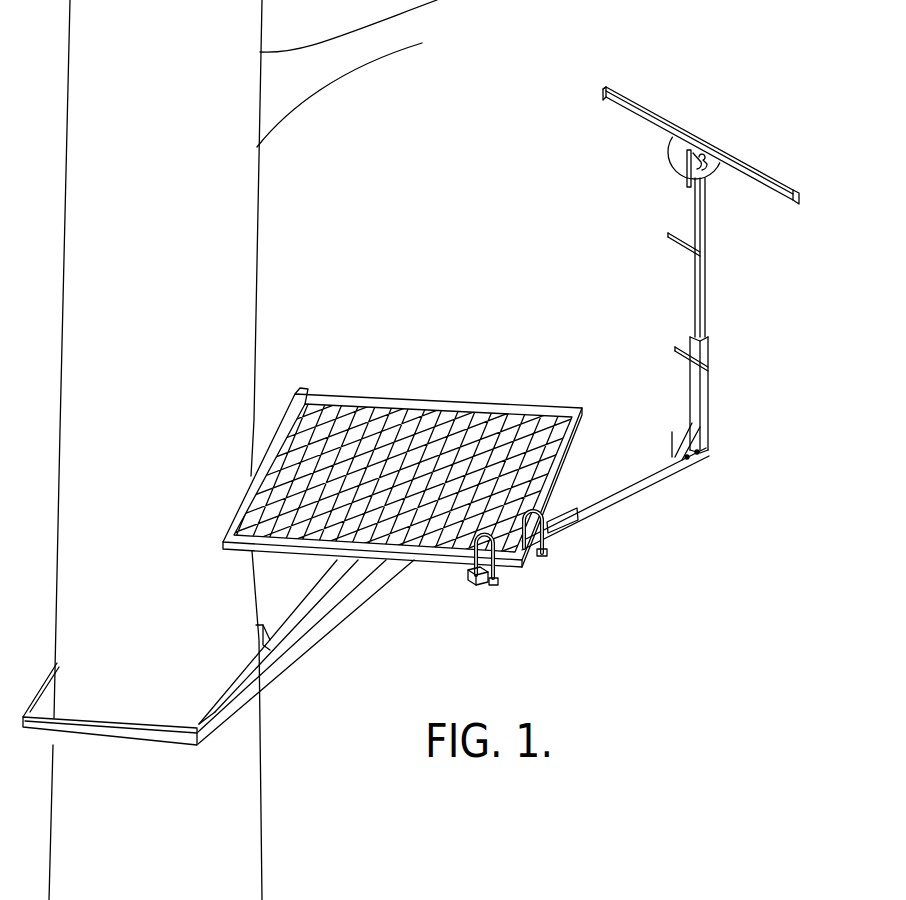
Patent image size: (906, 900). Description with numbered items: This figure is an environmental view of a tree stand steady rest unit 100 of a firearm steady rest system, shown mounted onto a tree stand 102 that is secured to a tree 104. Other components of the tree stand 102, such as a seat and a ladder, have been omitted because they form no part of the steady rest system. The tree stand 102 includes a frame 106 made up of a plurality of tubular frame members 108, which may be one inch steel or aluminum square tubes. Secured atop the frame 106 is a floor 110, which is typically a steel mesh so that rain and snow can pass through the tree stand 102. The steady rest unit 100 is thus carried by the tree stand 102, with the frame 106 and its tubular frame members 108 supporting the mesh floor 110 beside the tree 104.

The tree stand steady rest unit 100 is at (700, 312).
The tree stand 102 is at (337, 623).
The tree 104 is at (240, 325).
The frame 106 is at (279, 555).
The tubular frame members 108 is at (577, 463).
The floor 110 is at (437, 445).